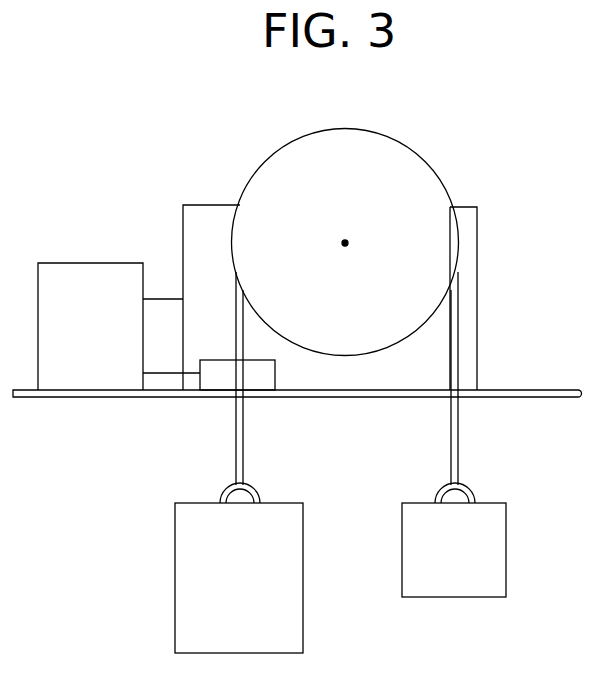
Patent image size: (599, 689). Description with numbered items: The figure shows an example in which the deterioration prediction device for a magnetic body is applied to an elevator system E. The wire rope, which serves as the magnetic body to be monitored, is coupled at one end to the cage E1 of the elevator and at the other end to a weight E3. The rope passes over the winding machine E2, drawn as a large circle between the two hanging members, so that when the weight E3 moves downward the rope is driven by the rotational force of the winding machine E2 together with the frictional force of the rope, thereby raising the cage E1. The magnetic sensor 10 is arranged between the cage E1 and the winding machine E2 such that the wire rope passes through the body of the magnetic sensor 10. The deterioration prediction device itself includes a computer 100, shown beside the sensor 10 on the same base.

The computer 100 is at (65, 263).
The magnetic sensor 10 is at (276, 378).
The elevator system E is at (474, 153).
The cage E1 is at (282, 501).
The winding machine E2 is at (372, 151).
The weight E3 is at (494, 501).